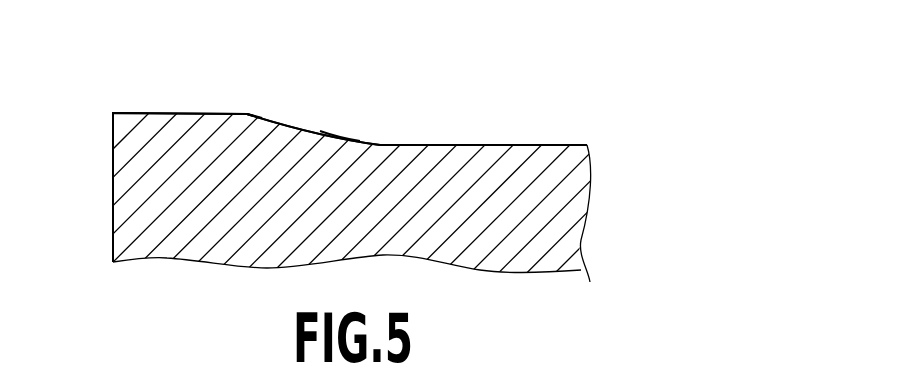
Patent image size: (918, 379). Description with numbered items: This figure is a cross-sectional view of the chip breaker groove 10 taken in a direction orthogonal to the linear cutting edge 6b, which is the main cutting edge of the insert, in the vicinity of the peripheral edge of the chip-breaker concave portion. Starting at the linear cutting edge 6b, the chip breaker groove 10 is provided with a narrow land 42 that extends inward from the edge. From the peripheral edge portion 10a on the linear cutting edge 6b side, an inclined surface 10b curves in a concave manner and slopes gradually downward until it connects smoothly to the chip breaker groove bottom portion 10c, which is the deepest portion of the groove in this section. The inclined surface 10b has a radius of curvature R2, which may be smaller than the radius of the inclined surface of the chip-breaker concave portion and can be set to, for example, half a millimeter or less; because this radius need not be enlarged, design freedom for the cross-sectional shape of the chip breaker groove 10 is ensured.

The chip breaker groove 10 is at (378, 140).
The peripheral edge portion 10a is at (247, 113).
The inclined surface 10b is at (275, 121).
The chip breaker groove bottom portion 10c is at (467, 145).
The linear cutting edge 6b is at (113, 113).
The narrow land 42 is at (183, 113).
The radius of curvature R2 is at (348, 98).